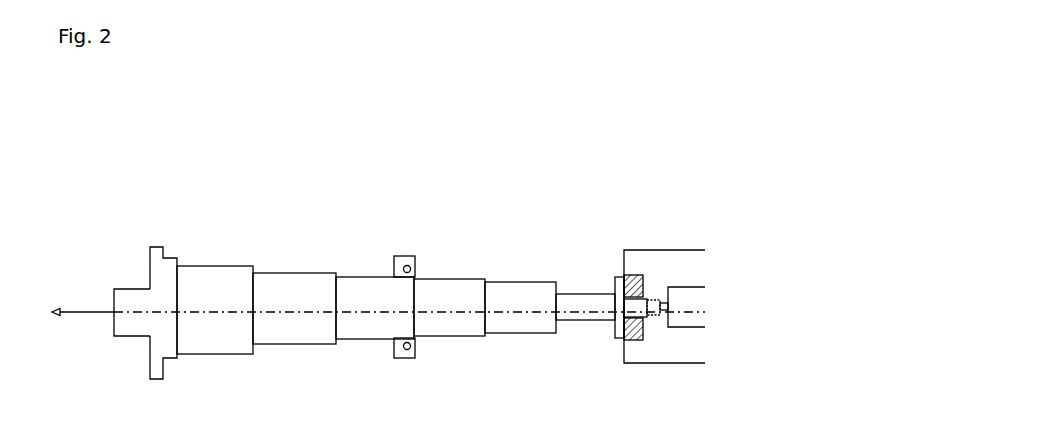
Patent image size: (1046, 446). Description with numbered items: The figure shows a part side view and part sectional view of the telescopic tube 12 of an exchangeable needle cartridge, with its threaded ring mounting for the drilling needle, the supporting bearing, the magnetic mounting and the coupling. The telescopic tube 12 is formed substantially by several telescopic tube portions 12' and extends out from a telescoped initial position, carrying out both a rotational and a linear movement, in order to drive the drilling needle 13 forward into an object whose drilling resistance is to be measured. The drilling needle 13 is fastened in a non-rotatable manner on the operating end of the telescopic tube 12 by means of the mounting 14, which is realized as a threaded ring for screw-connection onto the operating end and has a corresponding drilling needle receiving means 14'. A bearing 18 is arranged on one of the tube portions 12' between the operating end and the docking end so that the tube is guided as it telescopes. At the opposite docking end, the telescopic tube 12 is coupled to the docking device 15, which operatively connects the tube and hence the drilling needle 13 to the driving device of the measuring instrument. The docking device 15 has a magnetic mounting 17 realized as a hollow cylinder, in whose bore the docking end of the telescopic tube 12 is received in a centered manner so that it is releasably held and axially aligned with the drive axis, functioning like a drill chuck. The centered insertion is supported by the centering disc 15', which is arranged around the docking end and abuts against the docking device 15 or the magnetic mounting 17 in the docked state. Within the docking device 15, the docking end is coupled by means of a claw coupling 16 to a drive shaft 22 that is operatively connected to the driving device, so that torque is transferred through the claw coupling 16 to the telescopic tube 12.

The telescopic tube 12 is at (434, 274).
The telescopic tube portions 12' is at (215, 271).
The drilling needle 13 is at (80, 317).
The mounting 14 is at (160, 280).
The drilling needle receiving means 14' is at (116, 289).
The docking device 15 is at (664, 250).
The centering disc 15' is at (611, 345).
The claw coupling 16 is at (655, 328).
The magnetic mounting 17 is at (635, 277).
The bearing 18 is at (403, 257).
The drive shaft 22 is at (696, 320).